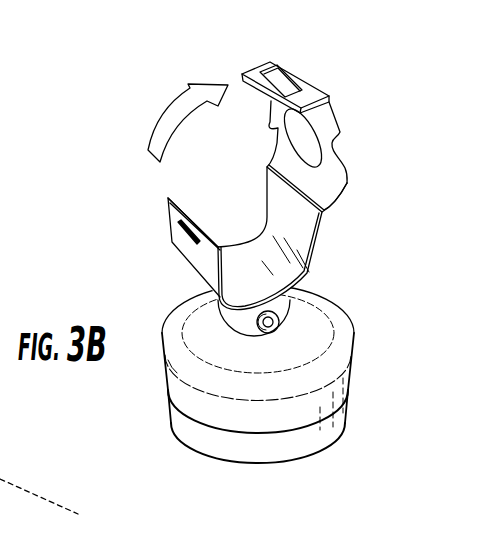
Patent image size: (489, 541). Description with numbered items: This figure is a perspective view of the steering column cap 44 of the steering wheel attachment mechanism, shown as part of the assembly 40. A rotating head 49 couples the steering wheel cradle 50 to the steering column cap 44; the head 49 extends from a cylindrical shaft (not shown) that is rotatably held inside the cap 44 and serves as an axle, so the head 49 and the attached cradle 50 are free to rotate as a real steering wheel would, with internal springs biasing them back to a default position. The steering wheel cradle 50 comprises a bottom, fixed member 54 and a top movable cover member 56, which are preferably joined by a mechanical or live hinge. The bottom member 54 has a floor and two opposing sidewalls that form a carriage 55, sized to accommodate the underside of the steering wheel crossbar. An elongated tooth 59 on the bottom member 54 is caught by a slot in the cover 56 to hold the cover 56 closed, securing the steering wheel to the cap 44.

The mounting panel 40 is at (39, 287).
The steering column cap 44 is at (336, 331).
The rotating head 49 is at (292, 303).
The steering wheel cradle 50 is at (240, 158).
The bottom fixed member 54 is at (150, 247).
The carriage 55 is at (168, 198).
The top movable cover member 56 is at (252, 68).
The elongated tooth 59 is at (178, 229).